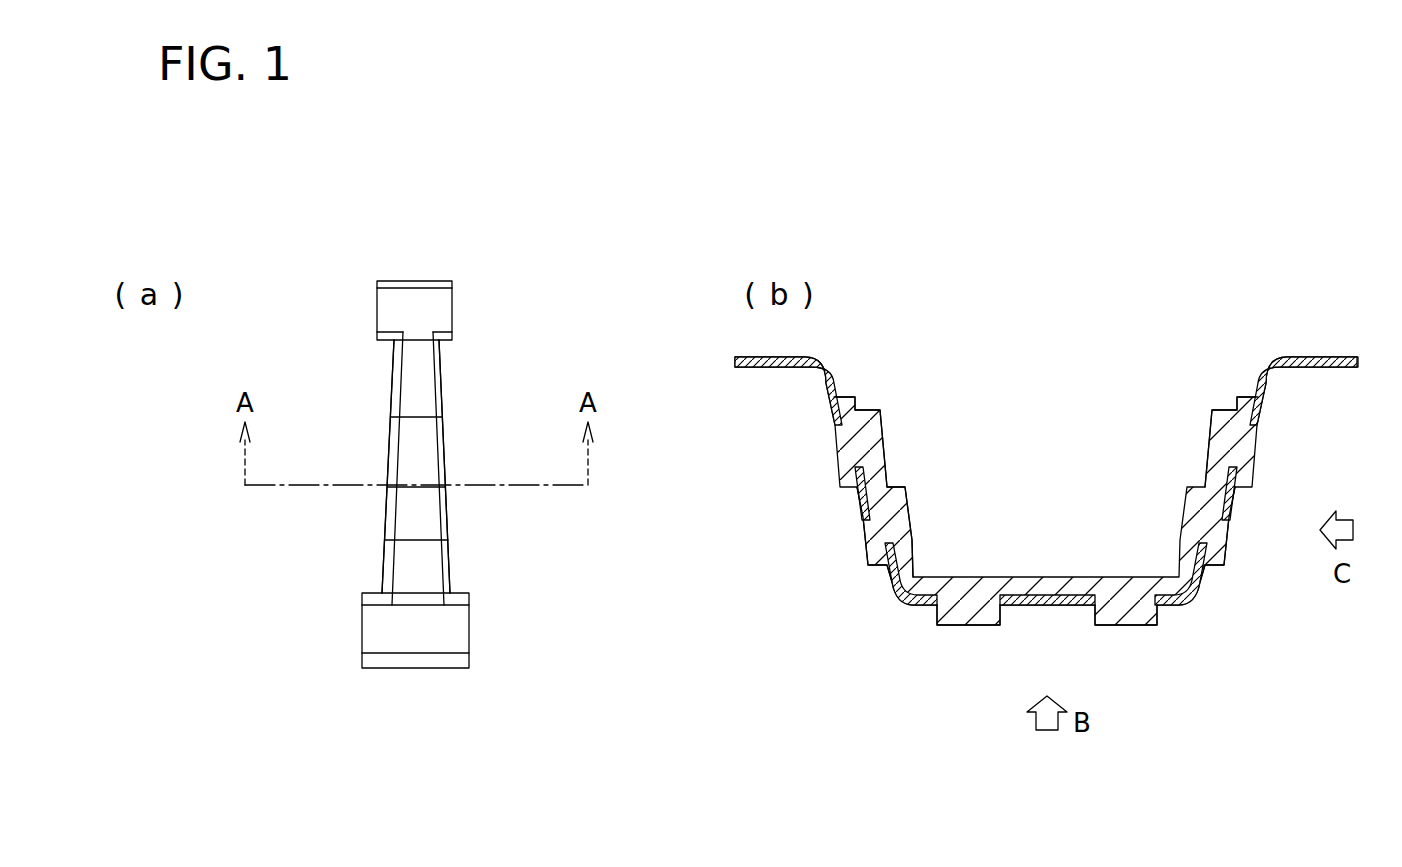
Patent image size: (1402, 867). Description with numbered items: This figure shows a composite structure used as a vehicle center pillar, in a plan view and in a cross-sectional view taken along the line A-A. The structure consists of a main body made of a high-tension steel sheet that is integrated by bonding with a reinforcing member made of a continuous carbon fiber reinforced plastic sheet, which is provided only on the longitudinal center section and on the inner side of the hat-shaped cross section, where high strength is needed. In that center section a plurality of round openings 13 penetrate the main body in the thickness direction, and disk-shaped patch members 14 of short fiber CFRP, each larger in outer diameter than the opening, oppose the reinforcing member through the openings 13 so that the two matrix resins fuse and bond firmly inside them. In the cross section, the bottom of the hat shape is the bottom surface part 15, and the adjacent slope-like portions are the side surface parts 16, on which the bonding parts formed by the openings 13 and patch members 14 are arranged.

The openings 13 is at (883, 533).
The patch members 14 is at (950, 612).
The bottom surface part 15 is at (1045, 607).
The side surface part 16 is at (1262, 410).